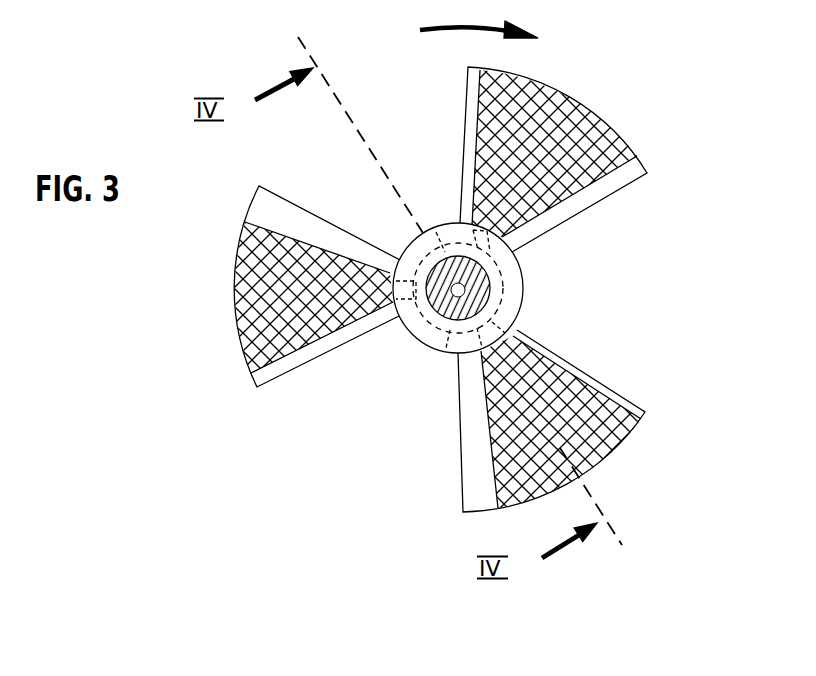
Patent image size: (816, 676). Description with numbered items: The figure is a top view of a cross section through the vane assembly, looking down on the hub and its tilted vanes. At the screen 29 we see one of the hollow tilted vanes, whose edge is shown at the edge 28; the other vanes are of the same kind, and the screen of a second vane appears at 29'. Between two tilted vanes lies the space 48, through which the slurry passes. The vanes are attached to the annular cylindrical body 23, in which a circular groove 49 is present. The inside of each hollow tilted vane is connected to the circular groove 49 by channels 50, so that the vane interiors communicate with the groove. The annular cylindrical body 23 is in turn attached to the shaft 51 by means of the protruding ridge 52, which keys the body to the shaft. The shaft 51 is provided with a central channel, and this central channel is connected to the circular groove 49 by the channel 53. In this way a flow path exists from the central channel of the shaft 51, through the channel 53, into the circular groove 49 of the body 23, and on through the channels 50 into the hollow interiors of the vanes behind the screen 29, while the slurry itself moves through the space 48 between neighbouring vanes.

The annular cylindrical body 23 is at (523, 288).
The edge of the hollow tilted vane 28 is at (608, 172).
The screen of the hollow tilted vane 29 is at (554, 148).
The blade facing 29' is at (315, 331).
The space between two tilted vanes 48 is at (602, 258).
The circular groove 49 is at (434, 228).
The channels 50 is at (510, 328).
The shaft 51 is at (515, 257).
The protruding ridge 52 is at (437, 320).
The channel 53 is at (465, 327).